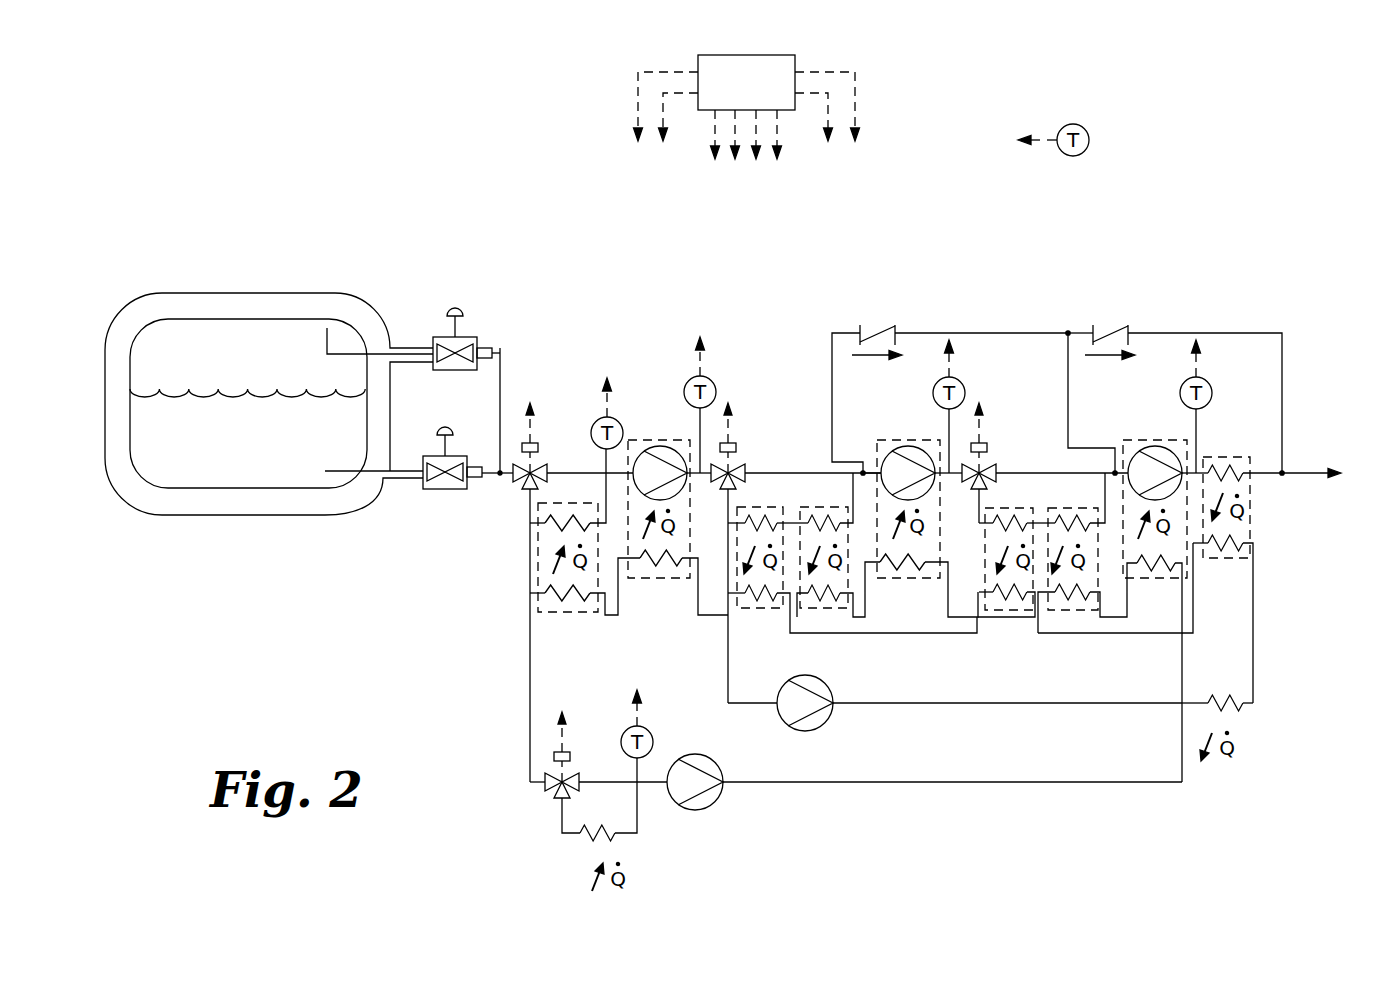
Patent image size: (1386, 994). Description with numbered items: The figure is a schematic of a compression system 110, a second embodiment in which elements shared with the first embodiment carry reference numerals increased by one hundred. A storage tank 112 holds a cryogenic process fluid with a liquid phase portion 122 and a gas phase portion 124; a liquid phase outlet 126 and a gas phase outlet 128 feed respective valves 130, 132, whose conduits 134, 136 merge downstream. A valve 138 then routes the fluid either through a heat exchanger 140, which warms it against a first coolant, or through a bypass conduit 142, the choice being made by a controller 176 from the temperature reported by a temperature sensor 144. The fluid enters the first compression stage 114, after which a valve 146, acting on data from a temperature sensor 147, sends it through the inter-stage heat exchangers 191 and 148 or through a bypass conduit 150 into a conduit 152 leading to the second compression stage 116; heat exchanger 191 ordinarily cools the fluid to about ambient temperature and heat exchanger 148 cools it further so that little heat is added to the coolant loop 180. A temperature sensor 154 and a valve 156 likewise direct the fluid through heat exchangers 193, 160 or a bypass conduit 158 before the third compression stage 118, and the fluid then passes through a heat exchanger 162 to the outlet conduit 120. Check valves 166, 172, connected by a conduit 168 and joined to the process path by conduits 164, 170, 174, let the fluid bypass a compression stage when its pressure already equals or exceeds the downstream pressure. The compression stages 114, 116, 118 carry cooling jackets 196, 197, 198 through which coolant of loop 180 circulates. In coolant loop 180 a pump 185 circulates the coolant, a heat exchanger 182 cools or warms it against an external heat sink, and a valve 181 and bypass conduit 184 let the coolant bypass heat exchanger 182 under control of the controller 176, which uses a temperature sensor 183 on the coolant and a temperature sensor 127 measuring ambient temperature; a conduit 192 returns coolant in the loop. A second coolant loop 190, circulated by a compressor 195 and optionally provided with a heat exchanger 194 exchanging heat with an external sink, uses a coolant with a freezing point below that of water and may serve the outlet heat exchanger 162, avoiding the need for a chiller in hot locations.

The compression system 110 is at (585, 215).
The storage tank 112 is at (203, 305).
The first compression stage 114 is at (657, 445).
The second compression stage 116 is at (908, 445).
The third compression stage 118 is at (1152, 445).
The outlet conduit 120 is at (1298, 472).
The liquid phase portion 122 is at (253, 452).
The gas phase portion 124 is at (253, 367).
The liquid phase outlet 126 is at (407, 462).
The temperature sensor 127 is at (1073, 124).
The gas phase outlet 128 is at (413, 348).
The valve 130 is at (444, 416).
The valve 132 is at (458, 312).
The conduit 134 is at (505, 477).
The conduit 136 is at (502, 380).
The valve 138 is at (541, 432).
The heat exchanger 140 is at (537, 552).
The bypass conduit 142 is at (570, 470).
The temperature sensor 144 is at (600, 416).
The valve 146 is at (735, 432).
The temperature sensor 147 is at (690, 377).
The inter-stage heat exchanger 148 is at (827, 610).
The bypass conduit 150 is at (787, 470).
The conduit 152 is at (873, 470).
The temperature sensor 154 is at (963, 380).
The valve 156 is at (985, 440).
The bypass conduit 158 is at (1018, 470).
The inter-stage heat exchanger 160 is at (1075, 612).
The heat exchanger 162 is at (1228, 560).
The conduit 164 is at (830, 343).
The check valve 166 is at (878, 322).
The conduit 168 is at (977, 332).
The conduit 170 is at (1072, 358).
The check valve 172 is at (1108, 320).
The conduit 174 is at (1228, 330).
The controller 176 is at (725, 94).
The coolant loop 180 is at (500, 702).
The valve 181 is at (572, 750).
The heat exchanger 182 is at (582, 837).
The temperature sensor 183 is at (655, 744).
The bypass conduit 184 is at (604, 783).
The pump 185 is at (697, 810).
The second coolant loop 190 is at (1282, 652).
The inter-stage heat exchanger 191 is at (762, 612).
The return line 192 is at (528, 680).
The inter-stage heat exchanger 193 is at (1012, 610).
The heat exchanger 194 is at (1235, 705).
The compressor 195 is at (830, 722).
The cooling jacket 196 is at (662, 578).
The cooling jacket 197 is at (910, 580).
The cooling jacket 198 is at (1155, 580).